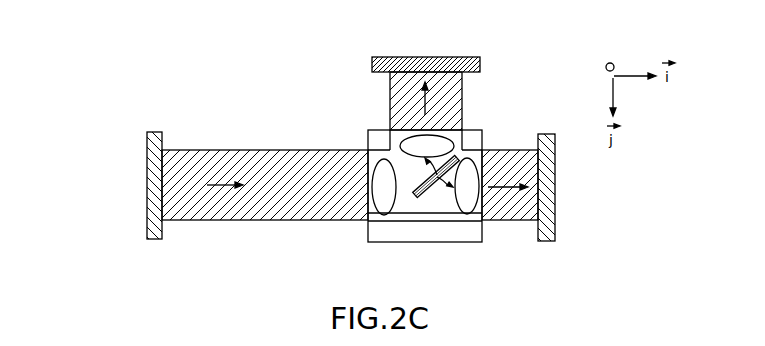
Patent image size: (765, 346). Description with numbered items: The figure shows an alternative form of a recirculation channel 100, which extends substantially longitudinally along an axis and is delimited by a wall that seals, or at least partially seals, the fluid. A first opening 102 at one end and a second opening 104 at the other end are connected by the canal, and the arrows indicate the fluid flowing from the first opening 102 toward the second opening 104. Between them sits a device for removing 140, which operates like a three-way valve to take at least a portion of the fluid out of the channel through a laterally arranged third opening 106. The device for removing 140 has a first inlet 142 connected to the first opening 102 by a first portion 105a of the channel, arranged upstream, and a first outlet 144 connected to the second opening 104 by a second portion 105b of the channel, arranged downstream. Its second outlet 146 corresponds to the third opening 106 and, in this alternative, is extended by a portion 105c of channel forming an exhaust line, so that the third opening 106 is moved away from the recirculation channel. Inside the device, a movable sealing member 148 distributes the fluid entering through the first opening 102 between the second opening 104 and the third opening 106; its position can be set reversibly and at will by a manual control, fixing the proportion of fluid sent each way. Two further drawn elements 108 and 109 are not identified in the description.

The recirculation channel 100 is at (296, 134).
The first opening 102 is at (146, 182).
The second opening 104 is at (557, 183).
The first portion of the channel 105a is at (292, 221).
The second portion of the channel 105b is at (506, 150).
The exhaust line channel portion 105c is at (390, 93).
The third opening 106 is at (425, 56).
The flange 108 is at (150, 239).
The cap 109 is at (481, 66).
The device for removing 140 is at (427, 234).
The first inlet 142 is at (388, 215).
The first outlet 144 is at (465, 214).
The second outlet 146 is at (410, 137).
The movable sealing member 148 is at (460, 155).